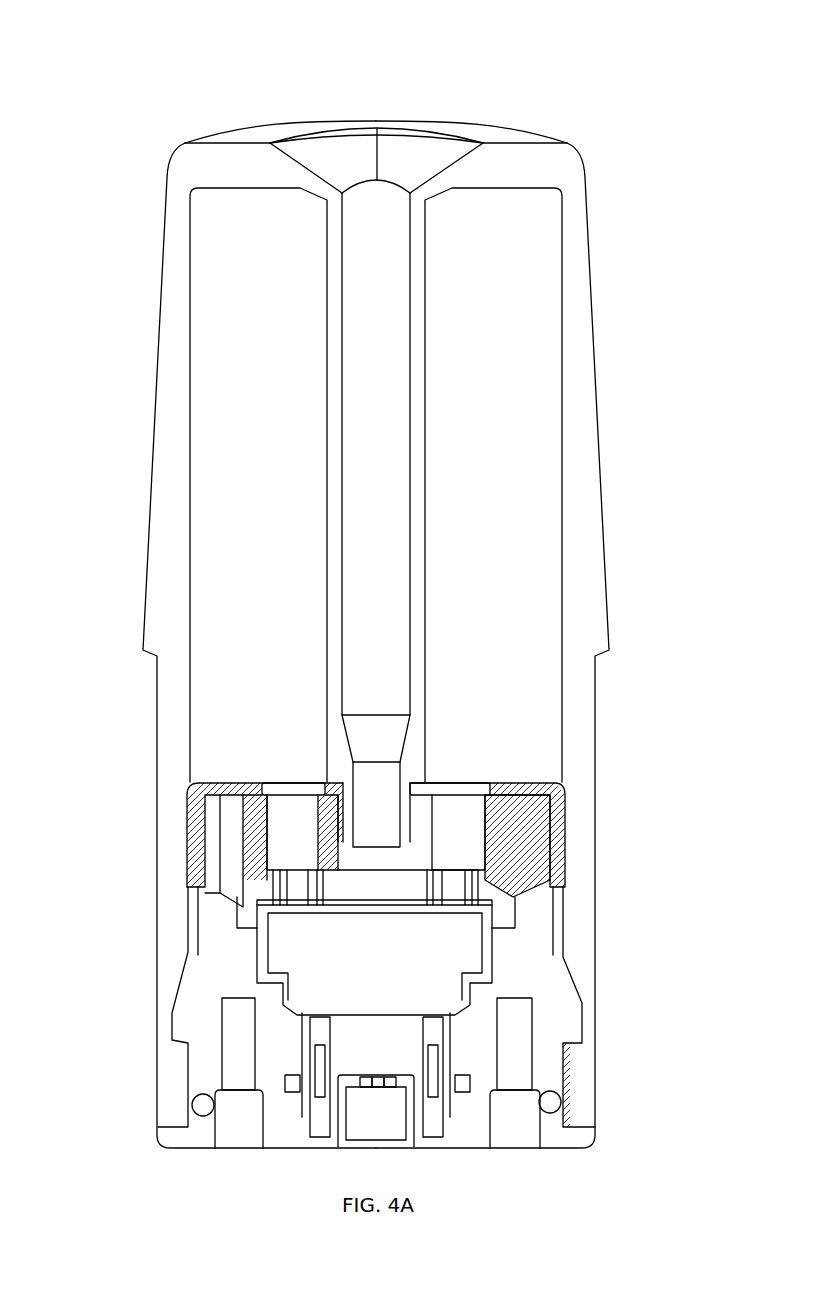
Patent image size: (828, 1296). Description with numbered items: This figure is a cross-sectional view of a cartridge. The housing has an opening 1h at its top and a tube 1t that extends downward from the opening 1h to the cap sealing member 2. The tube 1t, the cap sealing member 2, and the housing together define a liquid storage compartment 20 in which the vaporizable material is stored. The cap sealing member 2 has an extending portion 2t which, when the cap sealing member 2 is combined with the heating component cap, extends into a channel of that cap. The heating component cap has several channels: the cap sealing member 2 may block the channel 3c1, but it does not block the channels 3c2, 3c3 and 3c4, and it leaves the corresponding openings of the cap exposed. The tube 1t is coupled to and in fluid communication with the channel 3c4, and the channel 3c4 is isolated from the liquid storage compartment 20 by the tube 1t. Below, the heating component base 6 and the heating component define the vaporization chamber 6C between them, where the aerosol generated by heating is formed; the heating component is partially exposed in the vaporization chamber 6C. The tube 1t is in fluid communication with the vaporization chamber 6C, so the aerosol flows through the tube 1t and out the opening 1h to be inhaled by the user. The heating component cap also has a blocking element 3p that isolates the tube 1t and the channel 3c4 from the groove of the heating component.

The opening 1h is at (388, 152).
The tube 1t is at (418, 483).
The liquid storage compartment 20 is at (231, 434).
The cap sealing member 2 is at (560, 782).
The extending portion 2t is at (430, 812).
The channel 3c1 is at (230, 845).
The channel 3c2 is at (290, 805).
The channel 3c3 is at (455, 808).
The channel 3c4 is at (392, 862).
The blocking element 3p is at (367, 890).
The heating component base 6 is at (493, 1062).
The vaporization chamber 6C is at (389, 1061).